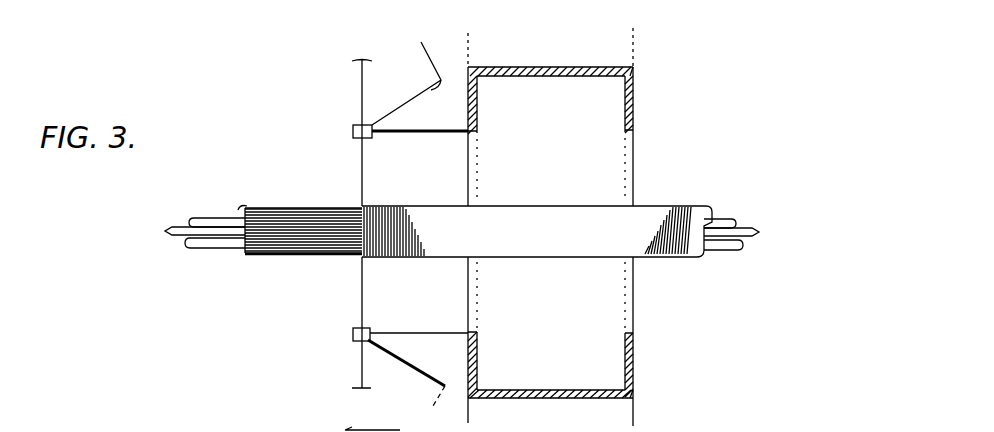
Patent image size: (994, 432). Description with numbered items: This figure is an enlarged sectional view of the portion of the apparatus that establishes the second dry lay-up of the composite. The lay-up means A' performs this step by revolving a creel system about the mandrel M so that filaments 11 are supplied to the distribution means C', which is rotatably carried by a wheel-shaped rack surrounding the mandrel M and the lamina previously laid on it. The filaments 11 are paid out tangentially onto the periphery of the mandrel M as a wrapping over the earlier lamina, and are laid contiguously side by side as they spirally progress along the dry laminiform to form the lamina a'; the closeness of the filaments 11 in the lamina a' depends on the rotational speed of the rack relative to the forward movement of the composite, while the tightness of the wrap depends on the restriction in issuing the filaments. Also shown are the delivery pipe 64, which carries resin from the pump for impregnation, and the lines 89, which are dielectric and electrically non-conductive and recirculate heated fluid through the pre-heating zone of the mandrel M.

The filament 11 is at (305, 213).
The delivery pipe 64 is at (191, 249).
The lines 89 is at (201, 218).
The mandrel M is at (243, 252).
The lay-up means A' is at (206, 171).
The distribution means C' is at (376, 236).
The lamina a' is at (537, 227).